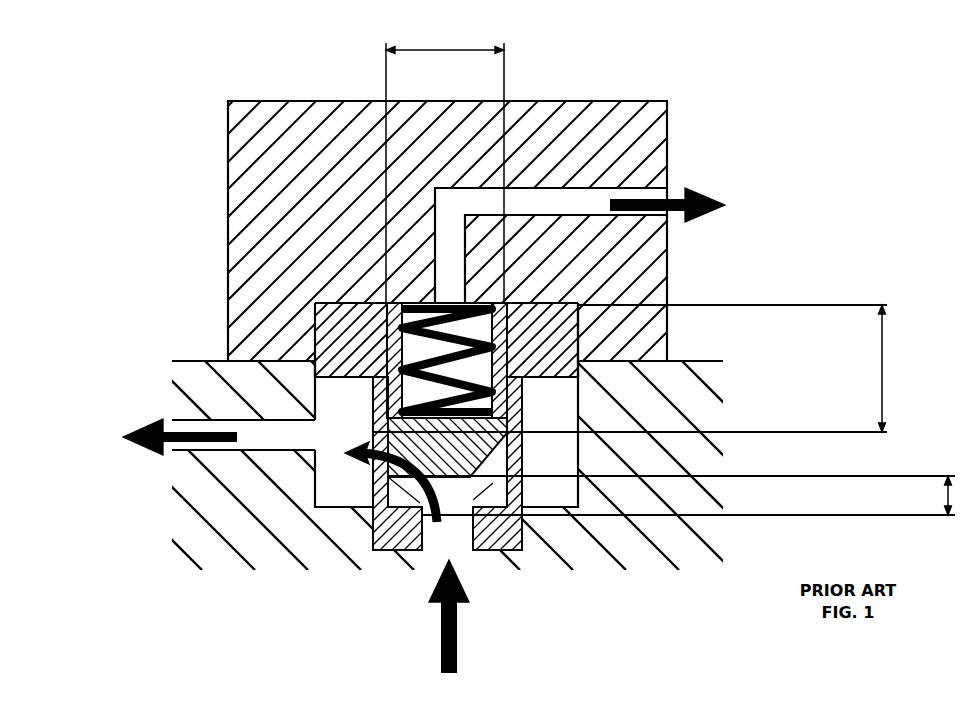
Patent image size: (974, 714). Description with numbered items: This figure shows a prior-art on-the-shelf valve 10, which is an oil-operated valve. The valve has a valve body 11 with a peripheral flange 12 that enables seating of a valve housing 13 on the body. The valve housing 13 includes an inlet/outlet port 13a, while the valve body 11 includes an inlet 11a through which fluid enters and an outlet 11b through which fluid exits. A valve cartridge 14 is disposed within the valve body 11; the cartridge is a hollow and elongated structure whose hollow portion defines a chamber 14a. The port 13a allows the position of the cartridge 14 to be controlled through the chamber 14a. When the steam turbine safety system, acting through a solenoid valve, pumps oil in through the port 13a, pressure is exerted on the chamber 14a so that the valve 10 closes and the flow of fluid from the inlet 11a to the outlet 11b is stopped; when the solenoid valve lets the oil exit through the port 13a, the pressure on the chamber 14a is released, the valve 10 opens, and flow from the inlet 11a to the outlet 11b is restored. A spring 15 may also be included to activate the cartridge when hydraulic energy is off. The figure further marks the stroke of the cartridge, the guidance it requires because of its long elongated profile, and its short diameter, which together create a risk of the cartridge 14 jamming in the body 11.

The on-the-shelf valve 10 is at (720, 83).
The valve body 11 is at (523, 552).
The inlet 11a is at (457, 625).
The outlet 11b is at (128, 428).
The peripheral flange 12 is at (592, 277).
The valve housing 13 is at (227, 108).
The inlet/outlet port 13a is at (722, 192).
The valve cartridge 14 is at (400, 457).
The chamber 14a is at (515, 316).
The spring 15 is at (515, 400).